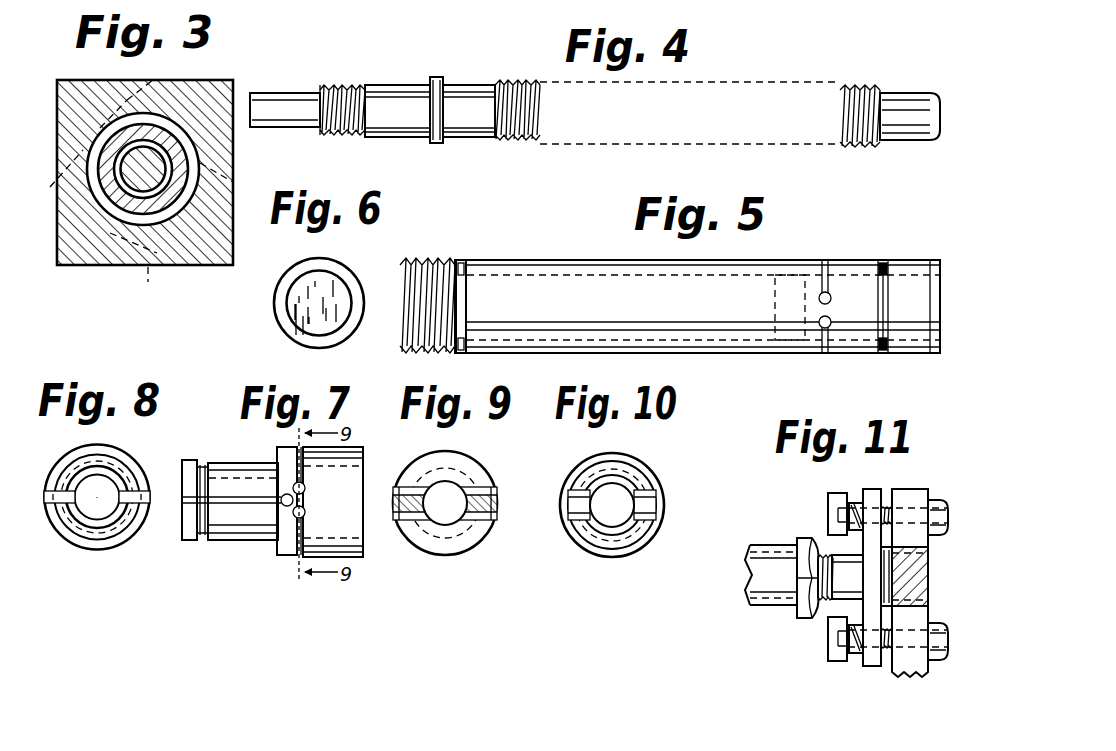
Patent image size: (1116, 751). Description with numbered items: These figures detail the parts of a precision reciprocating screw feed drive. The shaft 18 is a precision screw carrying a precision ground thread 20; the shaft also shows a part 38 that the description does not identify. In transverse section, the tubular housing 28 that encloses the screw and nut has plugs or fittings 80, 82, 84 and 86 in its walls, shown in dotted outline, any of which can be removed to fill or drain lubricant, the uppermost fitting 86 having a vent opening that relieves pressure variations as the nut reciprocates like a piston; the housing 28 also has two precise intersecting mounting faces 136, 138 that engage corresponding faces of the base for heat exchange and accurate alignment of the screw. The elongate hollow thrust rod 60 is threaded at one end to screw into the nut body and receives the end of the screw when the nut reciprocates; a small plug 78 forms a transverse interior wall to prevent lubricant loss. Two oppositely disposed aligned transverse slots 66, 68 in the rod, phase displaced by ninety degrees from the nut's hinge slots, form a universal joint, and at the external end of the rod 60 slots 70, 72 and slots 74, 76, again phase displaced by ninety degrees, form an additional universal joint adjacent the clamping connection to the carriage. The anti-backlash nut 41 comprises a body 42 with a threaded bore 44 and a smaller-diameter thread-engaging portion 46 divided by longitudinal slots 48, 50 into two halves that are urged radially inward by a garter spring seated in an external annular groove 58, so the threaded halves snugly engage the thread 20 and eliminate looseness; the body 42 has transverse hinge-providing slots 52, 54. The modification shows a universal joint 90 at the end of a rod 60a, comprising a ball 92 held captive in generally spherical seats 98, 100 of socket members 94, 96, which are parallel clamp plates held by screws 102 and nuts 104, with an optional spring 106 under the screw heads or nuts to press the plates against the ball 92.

In FIG. 3, the shaft 18 is at (155, 157).
In FIG. 4, the shaft 18 is at (400, 94).
In FIG. 4, the precision ground thread 20 is at (540, 83).
In FIG. 4, the collar 38 is at (441, 130).
In FIG. 3, the housing 28 is at (85, 266).
In FIG. 3, the plug or fitting 80 is at (205, 181).
In FIG. 3, the plug or fitting 82 is at (171, 236).
In FIG. 3, the plug or fitting 84 is at (52, 188).
In FIG. 3, the uppermost fitting 86 is at (156, 82).
In FIG. 3, the mounting surface 136 is at (54, 237).
In FIG. 3, the mounting surface 138 is at (195, 268).
In FIG. 5, the thrust rod 60 is at (718, 315).
In FIG. 6, the thrust rod 60 is at (276, 323).
In FIG. 5, the transverse slot 66 is at (463, 287).
In FIG. 5, the transverse slot 68 is at (494, 291).
In FIG. 5, the transverse slot 70 is at (825, 260).
In FIG. 5, the transverse slot 72 is at (820, 356).
In FIG. 5, the transverse slot 74 is at (884, 297).
In FIG. 5, the transverse slot 76 is at (898, 285).
In FIG. 5, the plug 78 is at (793, 297).
In FIG. 6, the plug 78 is at (338, 290).
In FIG. 8, the anti-backlash nut 41 is at (74, 559).
In FIG. 7, the anti-backlash nut 41 is at (262, 571).
In FIG. 9, the anti-backlash nut 41 is at (458, 573).
In FIG. 10, the anti-backlash nut 41 is at (627, 573).
In FIG. 8, the body 42 is at (128, 461).
In FIG. 7, the body 42 is at (361, 472).
In FIG. 9, the body 42 is at (478, 458).
In FIG. 10, the body 42 is at (643, 469).
In FIG. 7, the threaded bore 44 is at (340, 470).
In FIG. 10, the threaded bore 44 is at (600, 533).
In FIG. 8, the thread-engaging portion 46 is at (108, 530).
In FIG. 7, the thread-engaging portion 46 is at (252, 515).
In FIG. 8, the longitudinal slot 48 is at (52, 490).
In FIG. 8, the longitudinal slot 50 is at (143, 522).
In FIG. 7, the longitudinal slot 50 is at (183, 497).
In FIG. 7, the transverse hinge-providing slot 52 is at (295, 473).
In FIG. 9, the transverse hinge-providing slot 52 is at (480, 480).
In FIG. 10, the transverse hinge-providing slot 52 is at (580, 487).
In FIG. 7, the transverse hinge-providing slot 54 is at (287, 567).
In FIG. 9, the transverse hinge-providing slot 54 is at (478, 536).
In FIG. 10, the transverse hinge-providing slot 54 is at (575, 518).
In FIG. 7, the external annular groove 58 is at (203, 462).
In FIG. 11, the tube 60a is at (763, 567).
In FIG. 11, the modified universal joint 90 is at (788, 646).
In FIG. 11, the ball 92 is at (860, 593).
In FIG. 11, the socket member 94 is at (868, 489).
In FIG. 11, the socket member 96 is at (903, 497).
In FIG. 11, the seat 98 is at (845, 548).
In FIG. 11, the seat 100 is at (905, 545).
In FIG. 11, the screw 102 is at (835, 503).
In FIG. 11, the nut 104 is at (934, 500).
In FIG. 11, the spring 106 is at (853, 655).